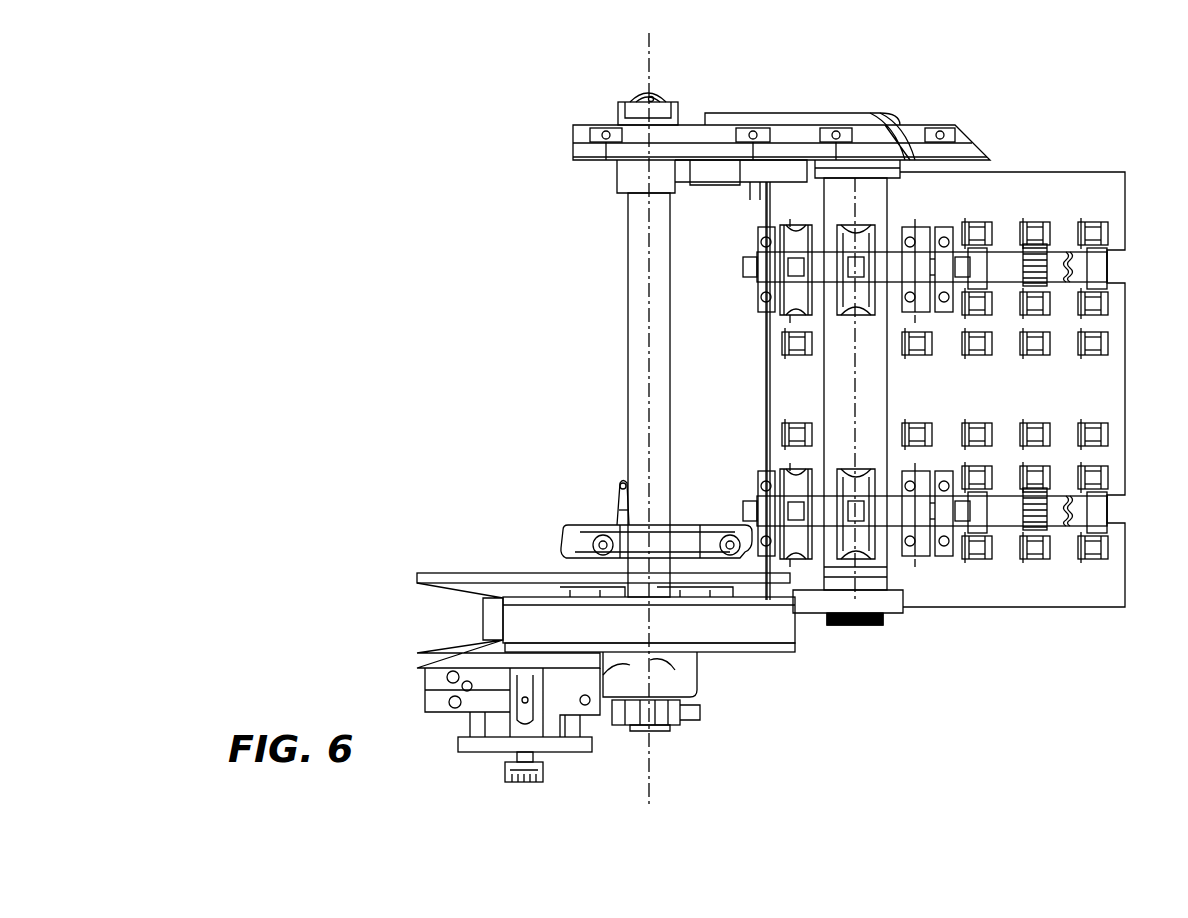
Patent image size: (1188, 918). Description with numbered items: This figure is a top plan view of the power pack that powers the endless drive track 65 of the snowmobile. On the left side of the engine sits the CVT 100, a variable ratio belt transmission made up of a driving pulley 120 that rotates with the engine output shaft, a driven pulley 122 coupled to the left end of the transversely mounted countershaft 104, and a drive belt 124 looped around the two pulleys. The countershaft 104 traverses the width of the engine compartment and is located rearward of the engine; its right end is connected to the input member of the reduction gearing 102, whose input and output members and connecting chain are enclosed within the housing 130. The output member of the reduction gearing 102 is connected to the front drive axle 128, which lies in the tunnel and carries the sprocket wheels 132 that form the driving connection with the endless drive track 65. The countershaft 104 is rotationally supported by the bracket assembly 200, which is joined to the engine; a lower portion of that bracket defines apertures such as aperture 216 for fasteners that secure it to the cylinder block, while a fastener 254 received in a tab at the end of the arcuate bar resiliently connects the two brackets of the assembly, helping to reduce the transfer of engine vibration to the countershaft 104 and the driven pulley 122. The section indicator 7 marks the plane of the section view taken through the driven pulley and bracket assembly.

The section line for FIG. 7 is at (656, 38).
The endless drive track 65 is at (1088, 378).
The CVT 100 is at (706, 696).
The reduction gearing 102 is at (808, 90).
The countershaft 104 is at (628, 352).
The driving pulley 120 is at (468, 573).
The driven pulley 122 is at (560, 597).
The drive belt 124 is at (781, 623).
The front drive axle 128 is at (878, 400).
The housing 130 is at (722, 130).
The sprocket wheels 132 is at (887, 262).
The bracket assembly 200 is at (686, 512).
The aperture 216 is at (620, 484).
The fastener 254 is at (595, 528).